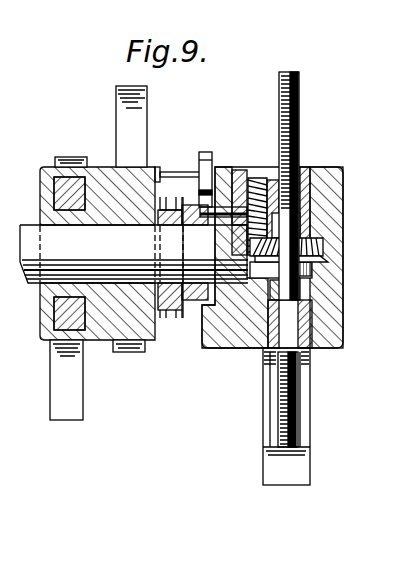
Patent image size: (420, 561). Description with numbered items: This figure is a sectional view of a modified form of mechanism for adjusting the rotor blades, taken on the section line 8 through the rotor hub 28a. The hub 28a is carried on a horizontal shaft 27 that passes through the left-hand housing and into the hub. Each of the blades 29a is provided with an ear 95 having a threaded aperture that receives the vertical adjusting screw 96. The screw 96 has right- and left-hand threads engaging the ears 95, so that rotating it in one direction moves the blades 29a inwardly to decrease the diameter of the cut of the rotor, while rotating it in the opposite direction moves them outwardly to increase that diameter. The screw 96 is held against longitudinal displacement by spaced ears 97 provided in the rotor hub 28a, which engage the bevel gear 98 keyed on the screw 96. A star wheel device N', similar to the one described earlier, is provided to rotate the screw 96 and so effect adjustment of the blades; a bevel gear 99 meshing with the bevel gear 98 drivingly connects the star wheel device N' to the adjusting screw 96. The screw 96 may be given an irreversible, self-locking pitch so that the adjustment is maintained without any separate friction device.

The section line 8- 8 is at (268, 24).
The shaft 27 is at (37, 284).
The star wheel device N' is at (201, 217).
The rotor hub 28a is at (344, 325).
The bevel gear 99 is at (258, 184).
The ears 95 is at (303, 167).
The spaced ears 97 is at (330, 224).
The bevel gear 98 is at (322, 252).
The adjusting screw 96 is at (301, 96).
The blades 29a is at (311, 418).